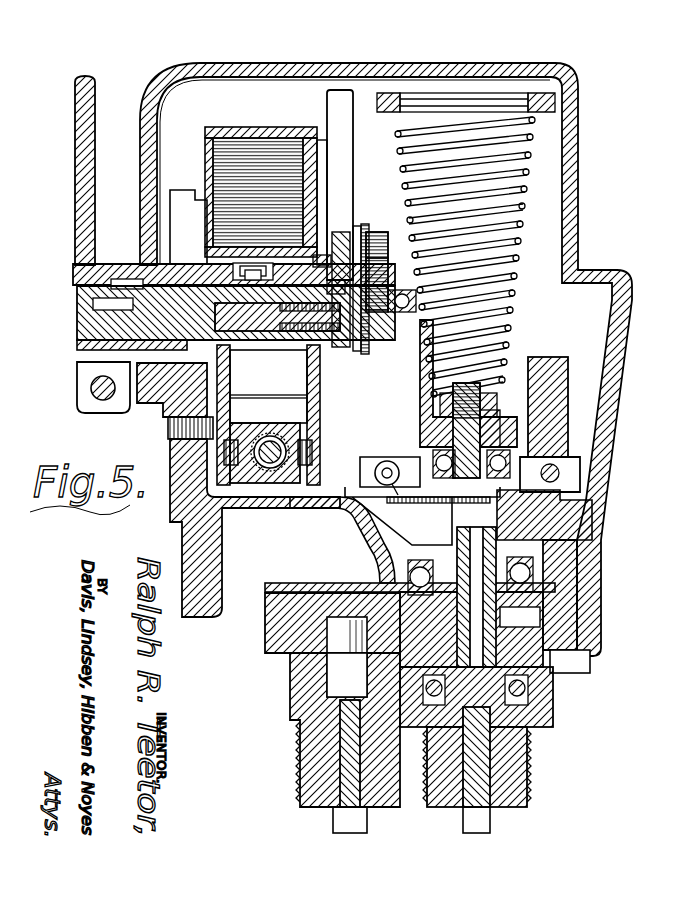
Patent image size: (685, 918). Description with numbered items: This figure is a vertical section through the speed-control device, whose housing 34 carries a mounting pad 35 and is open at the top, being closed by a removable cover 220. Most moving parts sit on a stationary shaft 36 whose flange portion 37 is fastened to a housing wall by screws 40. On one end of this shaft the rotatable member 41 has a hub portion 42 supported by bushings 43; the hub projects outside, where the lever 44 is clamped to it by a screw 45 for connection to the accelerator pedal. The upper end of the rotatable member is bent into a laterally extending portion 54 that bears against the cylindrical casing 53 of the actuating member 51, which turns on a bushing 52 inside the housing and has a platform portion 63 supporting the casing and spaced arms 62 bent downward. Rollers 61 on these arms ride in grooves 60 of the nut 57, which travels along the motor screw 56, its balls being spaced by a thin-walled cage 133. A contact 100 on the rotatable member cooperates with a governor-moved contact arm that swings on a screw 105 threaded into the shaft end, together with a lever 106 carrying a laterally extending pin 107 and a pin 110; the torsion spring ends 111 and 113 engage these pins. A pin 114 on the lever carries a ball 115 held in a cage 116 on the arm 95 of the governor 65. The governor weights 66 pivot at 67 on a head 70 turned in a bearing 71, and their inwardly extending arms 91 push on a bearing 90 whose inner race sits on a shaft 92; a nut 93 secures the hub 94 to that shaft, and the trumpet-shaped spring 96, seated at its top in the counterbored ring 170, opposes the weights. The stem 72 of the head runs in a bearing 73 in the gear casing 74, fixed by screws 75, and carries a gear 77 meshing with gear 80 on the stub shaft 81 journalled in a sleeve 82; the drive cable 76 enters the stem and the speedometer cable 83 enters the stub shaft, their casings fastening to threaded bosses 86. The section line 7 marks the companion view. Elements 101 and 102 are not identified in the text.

The removable cover 220 is at (583, 150).
The counterbored ring 170 is at (568, 103).
The trumpet-shaped spring 96 is at (505, 335).
The governor 65 is at (592, 332).
The lever 44 is at (76, 150).
The hub portion 42 is at (78, 255).
The rotatable member 41 is at (180, 248).
The stationary shaft 36 is at (90, 305).
The thin walled sleeve or cage 133 is at (290, 440).
The bushings 43 is at (140, 333).
The screw 45 is at (90, 385).
The flange portion 37 is at (180, 390).
The screws 40 is at (168, 436).
The mounting pad 35 is at (200, 570).
The contact 100 is at (235, 150).
The coil frame 101 is at (258, 127).
The cylindrical casing 53 is at (206, 155).
The laterally extending portion 54 is at (195, 196).
The actuating member 51 is at (322, 262).
The armature plate 102 is at (345, 103).
The platform portion 63 is at (320, 252).
The end of torsion spring 111 is at (341, 277).
The screw 105 is at (340, 348).
The pin 114 is at (357, 352).
The pin 110 is at (365, 226).
The other end of torsion spring 113 is at (372, 234).
The laterally extending pin 107 is at (388, 246).
The lever 106 is at (388, 266).
The cage 116 is at (396, 296).
The section line 7- 7 is at (392, 233).
The bushing 52 is at (268, 415).
The spaced arms 62 is at (300, 396).
The grooves 60 is at (240, 425).
The nut 57 is at (272, 466).
The screw 56 is at (266, 470).
The rollers 61 is at (232, 470).
The arm 95 is at (425, 388).
The ball 115 is at (440, 372).
The bearing 90 is at (430, 452).
The governor weights 66 is at (562, 382).
The nut 93 is at (500, 430).
The hub 94 is at (625, 392).
The housing 34 is at (648, 419).
The pivots 67 is at (575, 474).
The inwardly extending arms 91 is at (405, 488).
The head 70 is at (570, 520).
The shaft 92 is at (540, 560).
The bearing 71 is at (560, 566).
The gear 77 is at (540, 615).
The gear casing 74 is at (602, 628).
The screws 75 is at (580, 663).
The stem 72 is at (528, 727).
The bearing 73 is at (528, 690).
The gear 80 is at (265, 632).
The stub shaft 81 is at (340, 680).
The sleeve 82 is at (300, 748).
The threaded bosses 86 is at (298, 780).
The flexible drive cable 83 is at (340, 825).
The flexible drive cable 76 is at (490, 825).